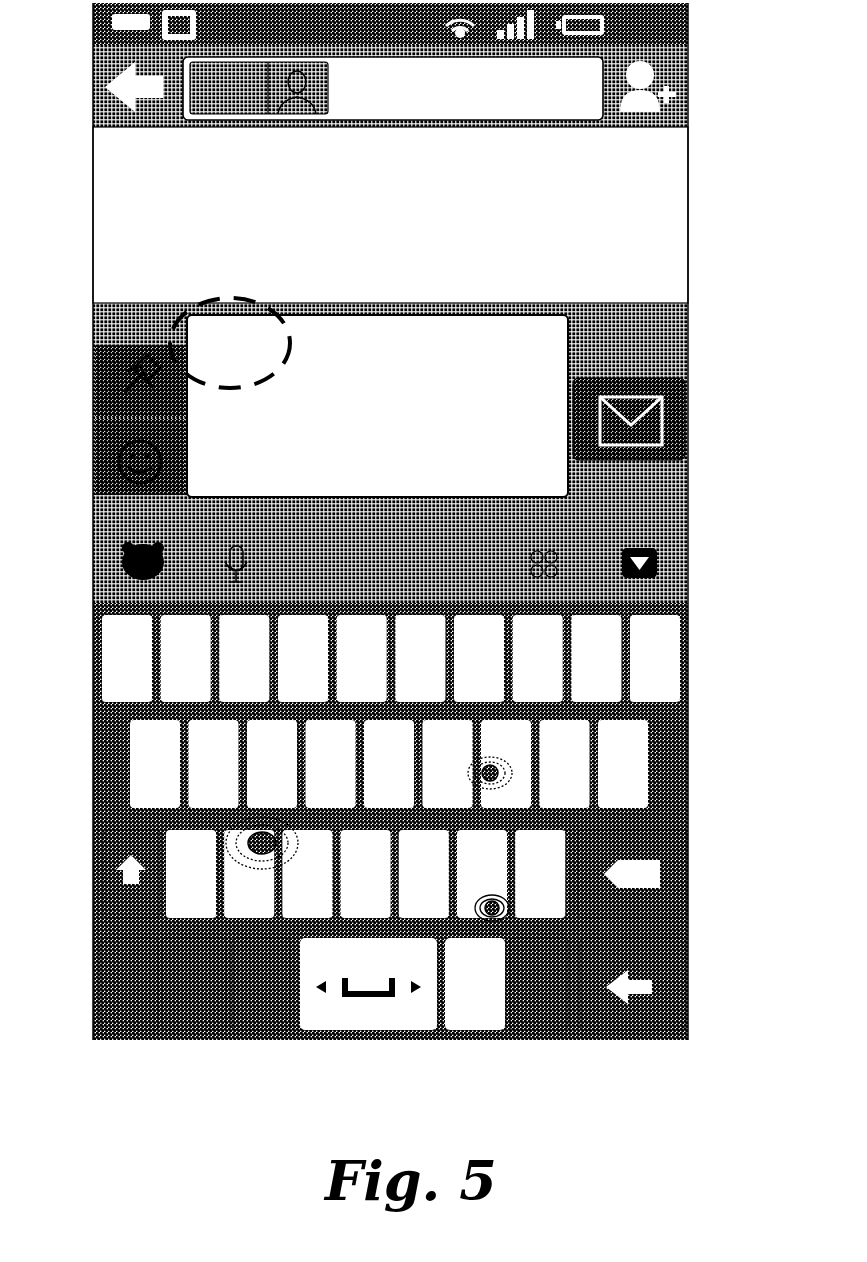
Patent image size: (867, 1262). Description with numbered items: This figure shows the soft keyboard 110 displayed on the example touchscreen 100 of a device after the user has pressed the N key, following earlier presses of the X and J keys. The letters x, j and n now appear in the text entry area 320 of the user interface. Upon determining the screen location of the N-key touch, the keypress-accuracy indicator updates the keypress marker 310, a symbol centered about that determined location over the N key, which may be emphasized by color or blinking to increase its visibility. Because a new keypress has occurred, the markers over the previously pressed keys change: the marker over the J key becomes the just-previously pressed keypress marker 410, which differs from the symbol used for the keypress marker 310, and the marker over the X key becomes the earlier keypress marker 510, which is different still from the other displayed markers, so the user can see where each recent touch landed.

The touchscreen 100 is at (725, 3).
The soft keyboard 110 is at (100, 556).
The keypress marker 310 is at (502, 912).
The text entry area 320 is at (275, 388).
The just-previously pressed keypress marker 410 is at (497, 782).
The previously pressed keypress marker 510 is at (248, 858).